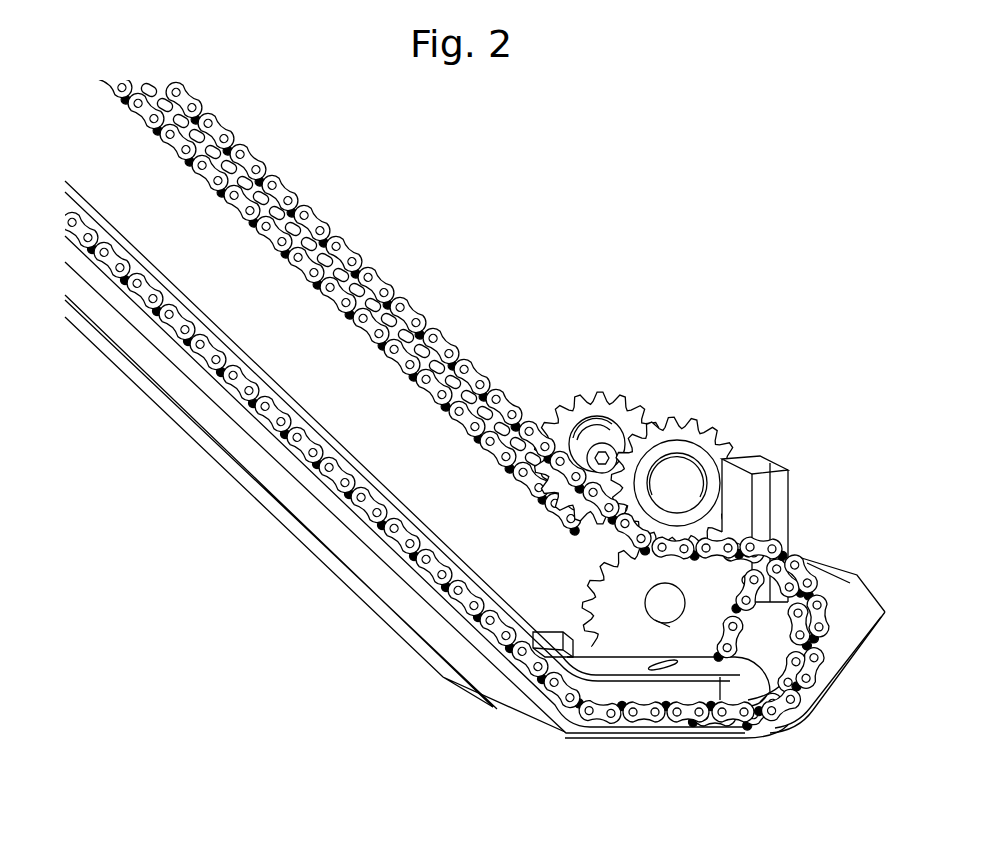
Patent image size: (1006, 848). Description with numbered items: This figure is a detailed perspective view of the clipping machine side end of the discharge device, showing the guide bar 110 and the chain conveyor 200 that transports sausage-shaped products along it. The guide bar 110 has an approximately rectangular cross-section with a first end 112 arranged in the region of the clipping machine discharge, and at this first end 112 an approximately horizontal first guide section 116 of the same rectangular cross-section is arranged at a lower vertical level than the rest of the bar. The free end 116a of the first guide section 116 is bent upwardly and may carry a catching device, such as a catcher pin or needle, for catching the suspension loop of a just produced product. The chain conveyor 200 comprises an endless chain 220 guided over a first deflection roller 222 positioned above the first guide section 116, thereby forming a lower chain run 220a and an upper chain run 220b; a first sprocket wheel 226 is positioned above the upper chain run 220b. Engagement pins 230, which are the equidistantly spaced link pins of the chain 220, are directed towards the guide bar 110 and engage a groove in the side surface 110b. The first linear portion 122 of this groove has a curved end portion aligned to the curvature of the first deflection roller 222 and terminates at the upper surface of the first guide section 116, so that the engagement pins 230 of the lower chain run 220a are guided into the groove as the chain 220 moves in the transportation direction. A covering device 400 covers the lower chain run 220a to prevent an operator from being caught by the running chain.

The guide bar 110 is at (405, 478).
The side surface 110b is at (385, 553).
The first end 112 is at (502, 695).
The first guide section 116 is at (667, 722).
The free end 116a is at (862, 617).
The first linear portion 122 is at (785, 695).
The chain conveyor 200 is at (360, 663).
The chain 220 is at (475, 394).
The lower chain run 220a is at (272, 410).
The upper chain run 220b is at (420, 307).
The first deflection roller 222 is at (708, 578).
The first sprocket wheel 226 is at (677, 426).
The engagement pins 230 is at (803, 652).
The covering device 400 is at (762, 487).